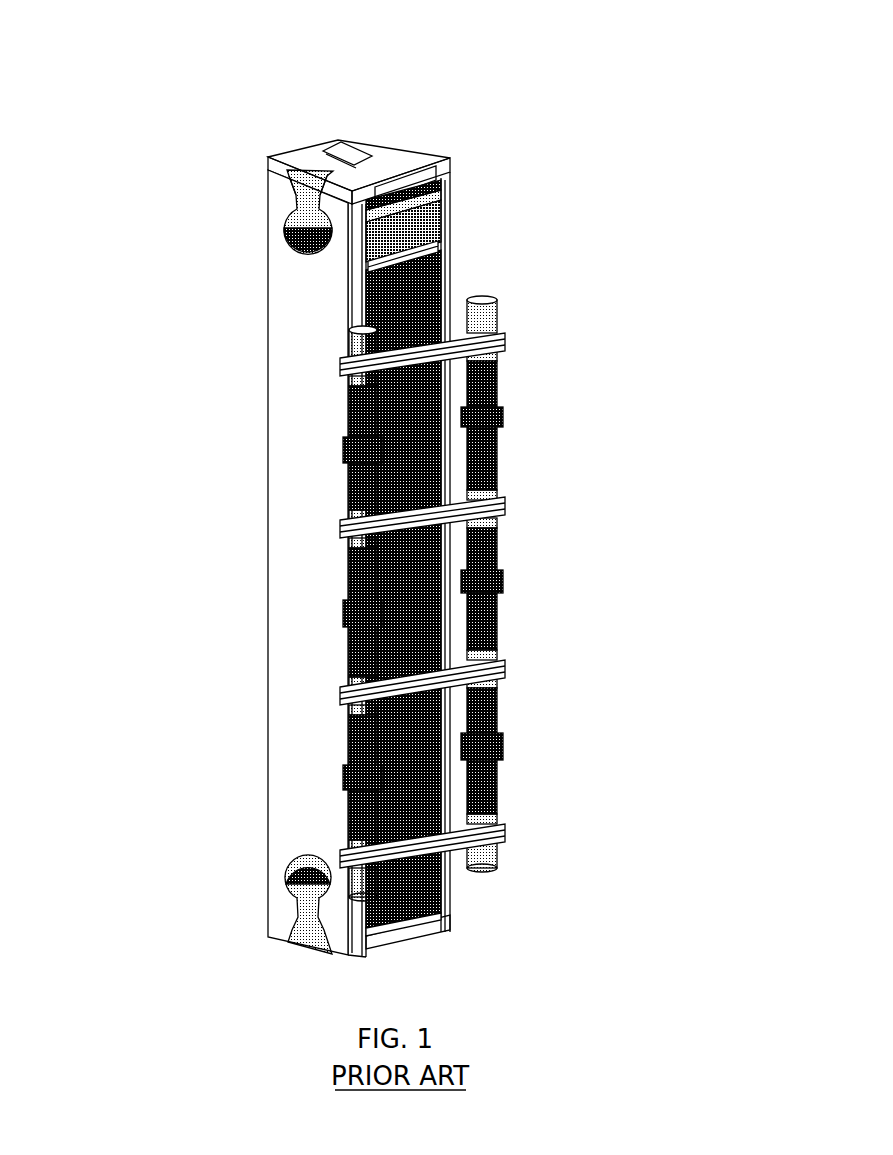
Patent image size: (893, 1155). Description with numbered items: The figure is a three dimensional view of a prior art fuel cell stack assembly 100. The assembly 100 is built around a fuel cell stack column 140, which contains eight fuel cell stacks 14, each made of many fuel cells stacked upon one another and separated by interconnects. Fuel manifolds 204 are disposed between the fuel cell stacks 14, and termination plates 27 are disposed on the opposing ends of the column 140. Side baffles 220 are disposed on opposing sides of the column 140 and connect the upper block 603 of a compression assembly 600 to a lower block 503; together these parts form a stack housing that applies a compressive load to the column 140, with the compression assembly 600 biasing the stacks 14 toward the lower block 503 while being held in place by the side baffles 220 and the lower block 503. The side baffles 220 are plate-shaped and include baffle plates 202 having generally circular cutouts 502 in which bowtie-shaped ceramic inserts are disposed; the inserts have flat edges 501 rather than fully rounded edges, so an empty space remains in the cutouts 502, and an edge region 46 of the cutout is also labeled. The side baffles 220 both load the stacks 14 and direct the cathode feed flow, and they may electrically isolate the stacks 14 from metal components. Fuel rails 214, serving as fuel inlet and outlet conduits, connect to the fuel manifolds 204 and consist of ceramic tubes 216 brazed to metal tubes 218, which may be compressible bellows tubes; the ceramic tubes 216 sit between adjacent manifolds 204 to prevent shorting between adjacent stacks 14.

The fuel cell stack assembly 100 is at (256, 65).
The compression assembly 600 is at (418, 521).
The upper block 603 is at (401, 157).
The flat edges 501 is at (235, 194).
The cutout neck edge 46 is at (295, 190).
The circular cutouts 502 is at (293, 246).
The lower block 503 is at (268, 920).
The side baffles 220 is at (195, 531).
The baffle plates 202 is at (292, 356).
The termination plates 27 is at (438, 252).
The fuel manifolds 204 is at (276, 613).
The fuel rails 214 is at (548, 584).
The ceramic tubes 216 is at (339, 626).
The metal tubes 218 is at (343, 514).
The fuel cell stacks 14 is at (419, 394).
The fuel cell stack column 140 is at (460, 585).